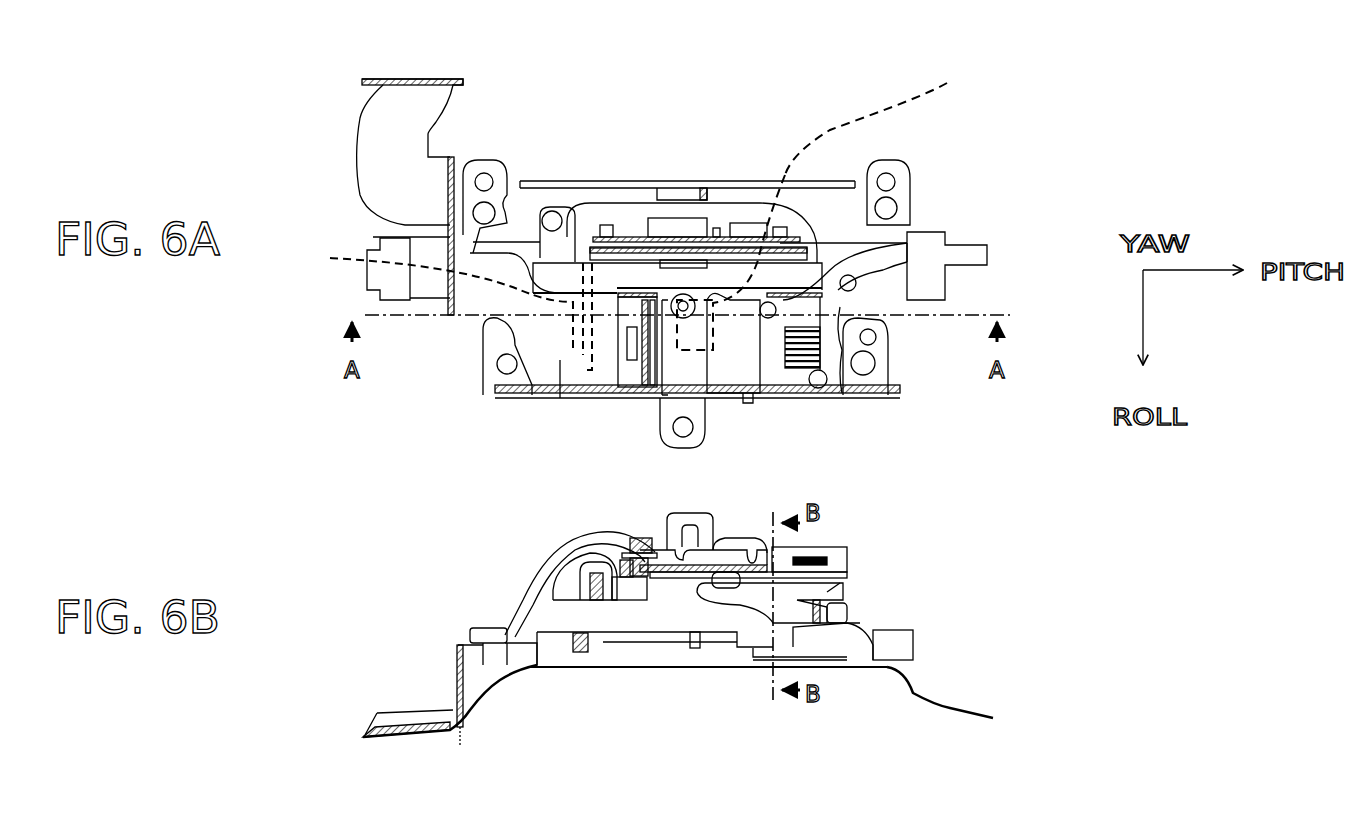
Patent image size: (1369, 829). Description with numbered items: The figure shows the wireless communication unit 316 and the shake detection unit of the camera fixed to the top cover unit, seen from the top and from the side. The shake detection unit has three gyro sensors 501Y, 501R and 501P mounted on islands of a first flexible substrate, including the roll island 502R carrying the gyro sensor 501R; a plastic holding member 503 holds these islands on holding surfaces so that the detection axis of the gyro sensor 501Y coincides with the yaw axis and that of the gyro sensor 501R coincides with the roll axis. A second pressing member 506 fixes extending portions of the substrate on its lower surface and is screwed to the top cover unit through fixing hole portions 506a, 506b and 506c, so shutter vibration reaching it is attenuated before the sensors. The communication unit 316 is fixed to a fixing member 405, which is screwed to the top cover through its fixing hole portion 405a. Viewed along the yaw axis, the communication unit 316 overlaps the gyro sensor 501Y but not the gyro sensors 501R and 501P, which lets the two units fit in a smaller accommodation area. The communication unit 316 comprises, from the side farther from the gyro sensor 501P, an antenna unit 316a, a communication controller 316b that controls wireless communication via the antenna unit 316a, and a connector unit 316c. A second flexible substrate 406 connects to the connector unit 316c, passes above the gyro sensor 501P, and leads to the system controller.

In FIG. 6A, the holding member 503 is at (603, 242).
In FIG. 6A, the roll island 502R is at (613, 236).
In FIG. 6A, the gyro sensor 501R is at (688, 224).
In FIG. 6A, the gyro sensor 501Y is at (892, 116).
In FIG. 6A, the gyro sensor 501P is at (430, 309).
In FIG. 6A, the second pressing member 506 is at (885, 267).
In FIG. 6A, the fixing hole portion 506a is at (683, 422).
In FIG. 6B, the fixing hole portion 506a is at (690, 531).
In FIG. 6A, the fixing hole portion 506b is at (488, 212).
In FIG. 6A, the fixing hole portion 506c is at (888, 212).
In FIG. 6A, the communication unit 316 is at (790, 285).
In FIG. 6B, the communication unit 316 is at (840, 552).
In FIG. 6A, the antenna unit 316a is at (818, 372).
In FIG. 6B, the antenna unit 316a is at (817, 548).
In FIG. 6A, the communication controller 316b is at (718, 360).
In FIG. 6B, the communication controller 316b is at (733, 550).
In FIG. 6A, the connector unit 316c is at (640, 385).
In FIG. 6B, the connector unit 316c is at (648, 543).
In FIG. 6A, the fixing member 405 is at (508, 393).
In FIG. 6B, the fixing member 405 is at (533, 610).
In FIG. 6A, the fixing hole portion 405a is at (505, 363).
In FIG. 6A, the second flexible substrate 406 is at (560, 362).
In FIG. 6B, the second flexible substrate 406 is at (580, 537).